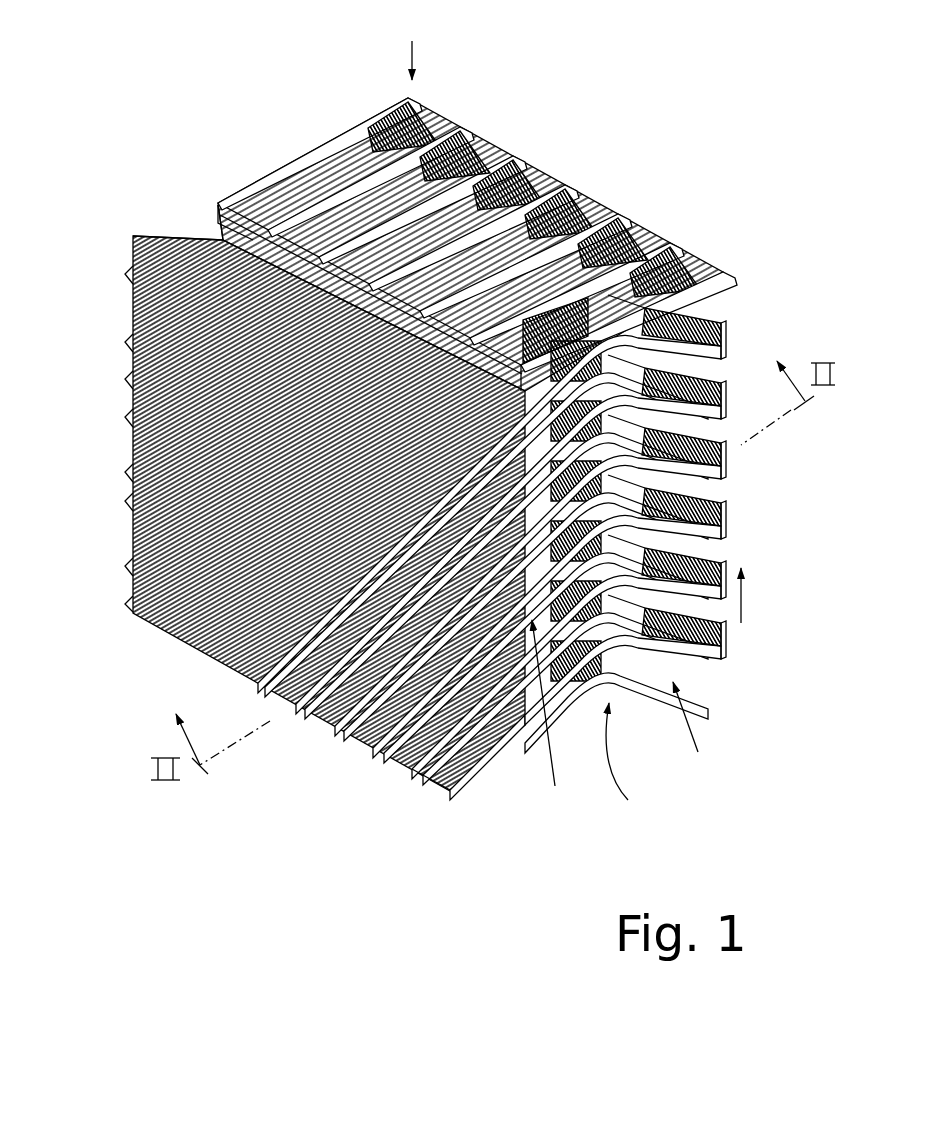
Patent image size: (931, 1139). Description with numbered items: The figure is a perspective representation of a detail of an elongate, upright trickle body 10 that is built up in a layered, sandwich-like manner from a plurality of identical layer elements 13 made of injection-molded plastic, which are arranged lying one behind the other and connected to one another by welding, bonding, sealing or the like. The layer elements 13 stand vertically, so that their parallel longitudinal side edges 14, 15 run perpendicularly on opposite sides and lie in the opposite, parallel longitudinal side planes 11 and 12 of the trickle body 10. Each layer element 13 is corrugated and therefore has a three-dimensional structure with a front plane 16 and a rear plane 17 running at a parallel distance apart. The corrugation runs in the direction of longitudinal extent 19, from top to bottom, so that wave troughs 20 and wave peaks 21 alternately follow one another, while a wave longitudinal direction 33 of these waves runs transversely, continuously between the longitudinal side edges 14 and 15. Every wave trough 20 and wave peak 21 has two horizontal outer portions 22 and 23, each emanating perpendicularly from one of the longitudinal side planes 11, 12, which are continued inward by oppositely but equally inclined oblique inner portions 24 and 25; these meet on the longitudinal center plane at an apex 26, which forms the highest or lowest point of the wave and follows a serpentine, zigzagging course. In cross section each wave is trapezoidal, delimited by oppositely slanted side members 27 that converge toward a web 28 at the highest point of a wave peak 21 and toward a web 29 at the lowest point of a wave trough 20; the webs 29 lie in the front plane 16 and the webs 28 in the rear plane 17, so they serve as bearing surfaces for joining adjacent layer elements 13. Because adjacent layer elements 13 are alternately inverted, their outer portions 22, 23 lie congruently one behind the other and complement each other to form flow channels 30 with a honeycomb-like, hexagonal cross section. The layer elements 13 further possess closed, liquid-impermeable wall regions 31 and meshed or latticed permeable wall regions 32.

The trickle body 10 is at (561, 118).
The longitudinal side plane 11 is at (126, 205).
The longitudinal side plane 12 is at (407, 45).
The layer element 13 is at (512, 710).
The longitudinal side edge 14 is at (124, 336).
The longitudinal side edge 15 is at (712, 300).
The front plane 16 is at (695, 730).
The rear plane 17 is at (255, 155).
The direction of longitudinal extent 19 is at (745, 604).
The wave trough 20 is at (124, 466).
The wave peak 21 is at (124, 494).
The outer portion 22 is at (460, 775).
The outer portion 23 is at (702, 632).
The inner portion 24 is at (538, 638).
The inner portion 25 is at (632, 614).
The apex 26 is at (627, 763).
The side member 27 is at (124, 268).
The web 28 is at (124, 373).
The web 29 is at (650, 385).
The flow channel 30 is at (340, 150).
The closed wall region 31 is at (544, 591).
The permeable wall region 32 is at (627, 227).
The wave longitudinal direction 33 is at (558, 632).